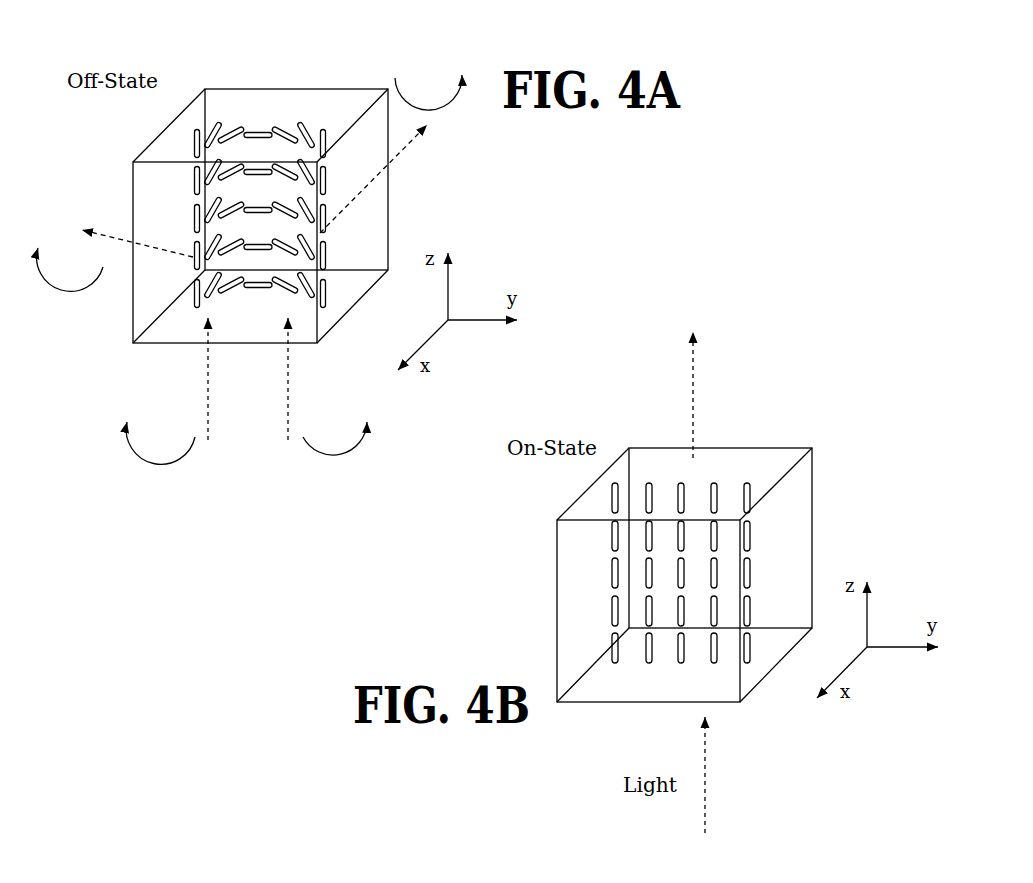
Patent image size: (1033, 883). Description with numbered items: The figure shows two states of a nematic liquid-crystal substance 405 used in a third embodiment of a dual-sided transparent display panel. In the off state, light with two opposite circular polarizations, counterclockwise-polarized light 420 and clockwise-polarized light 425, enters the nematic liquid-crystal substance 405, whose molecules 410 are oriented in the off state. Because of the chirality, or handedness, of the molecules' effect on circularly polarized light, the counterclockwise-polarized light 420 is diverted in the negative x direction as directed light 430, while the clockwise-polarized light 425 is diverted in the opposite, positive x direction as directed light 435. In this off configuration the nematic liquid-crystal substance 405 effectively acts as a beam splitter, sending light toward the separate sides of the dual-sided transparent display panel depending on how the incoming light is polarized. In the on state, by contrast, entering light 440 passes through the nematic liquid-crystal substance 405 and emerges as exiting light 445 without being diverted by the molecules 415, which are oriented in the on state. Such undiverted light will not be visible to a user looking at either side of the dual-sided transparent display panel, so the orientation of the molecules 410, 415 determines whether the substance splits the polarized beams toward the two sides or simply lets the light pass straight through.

In FIG. 4A, the nematic liquid-crystal substance 405 is at (242, 88).
In FIG. 4B, the nematic liquid-crystal substance 405 is at (793, 448).
In FIG. 4A, the molecules 410 is at (310, 140).
In FIG. 4B, the molecules 415 is at (747, 570).
In FIG. 4A, the counterclockwise-polarized light 420 is at (363, 457).
In FIG. 4A, the clockwise-polarized light 425 is at (160, 471).
In FIG. 4A, the directed light 430 is at (370, 183).
In FIG. 4A, the directed light 435 is at (122, 242).
In FIG. 4B, the entering light 440 is at (705, 780).
In FIG. 4B, the exiting light 445 is at (697, 380).